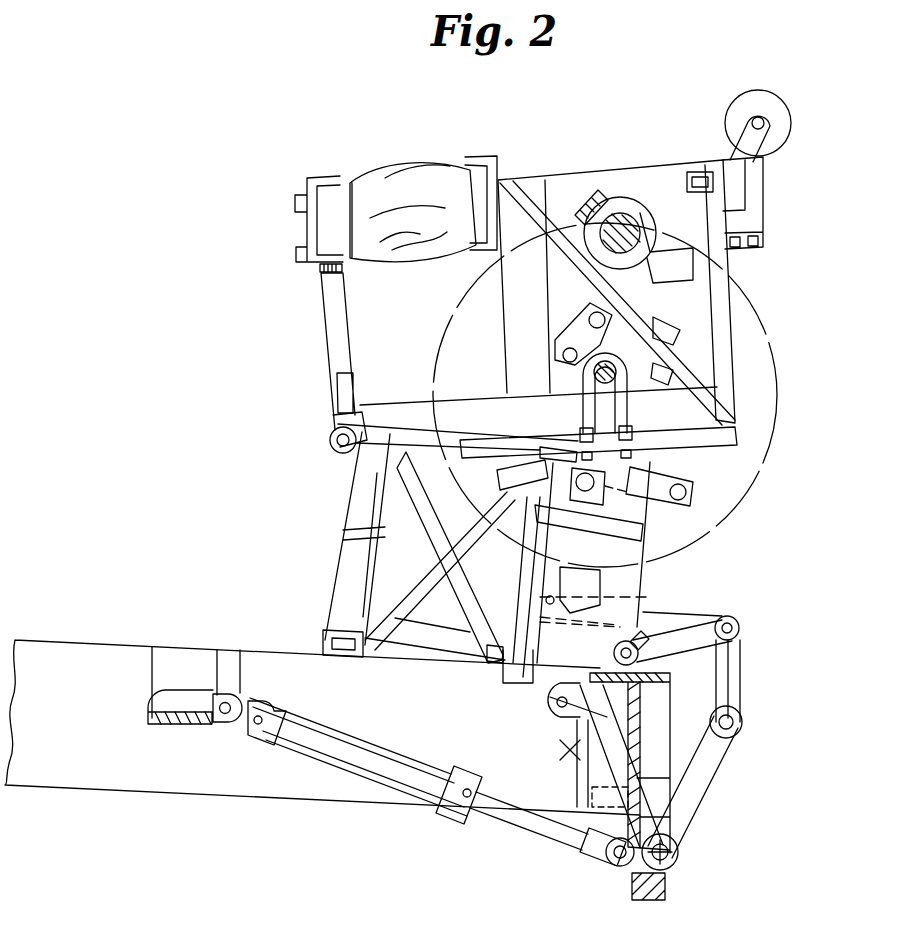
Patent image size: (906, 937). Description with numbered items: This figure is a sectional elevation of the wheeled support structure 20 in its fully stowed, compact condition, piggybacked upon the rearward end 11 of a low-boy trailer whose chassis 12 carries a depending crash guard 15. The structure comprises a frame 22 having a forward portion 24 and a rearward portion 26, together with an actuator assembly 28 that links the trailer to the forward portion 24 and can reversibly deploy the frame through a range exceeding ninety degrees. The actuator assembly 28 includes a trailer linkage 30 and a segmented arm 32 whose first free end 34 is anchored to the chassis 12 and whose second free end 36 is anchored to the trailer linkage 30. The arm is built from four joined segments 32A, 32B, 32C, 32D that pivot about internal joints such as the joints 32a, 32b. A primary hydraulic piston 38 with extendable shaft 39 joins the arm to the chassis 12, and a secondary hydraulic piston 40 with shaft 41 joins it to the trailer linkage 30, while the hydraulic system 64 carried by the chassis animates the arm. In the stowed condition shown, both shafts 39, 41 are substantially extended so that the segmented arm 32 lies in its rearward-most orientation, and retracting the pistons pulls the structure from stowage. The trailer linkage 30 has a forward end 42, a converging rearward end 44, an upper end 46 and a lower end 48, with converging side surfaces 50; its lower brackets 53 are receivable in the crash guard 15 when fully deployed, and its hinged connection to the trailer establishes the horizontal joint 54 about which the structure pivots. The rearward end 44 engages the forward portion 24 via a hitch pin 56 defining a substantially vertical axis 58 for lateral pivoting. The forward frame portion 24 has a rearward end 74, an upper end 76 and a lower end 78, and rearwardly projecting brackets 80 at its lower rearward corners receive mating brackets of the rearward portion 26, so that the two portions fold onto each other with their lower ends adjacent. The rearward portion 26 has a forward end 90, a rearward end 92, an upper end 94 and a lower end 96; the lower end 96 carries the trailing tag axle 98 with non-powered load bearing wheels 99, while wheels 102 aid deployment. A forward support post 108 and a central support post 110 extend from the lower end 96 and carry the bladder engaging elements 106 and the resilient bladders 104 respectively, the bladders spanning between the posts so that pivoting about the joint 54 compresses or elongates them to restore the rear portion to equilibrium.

The rearward end of the trailer 11 is at (105, 797).
The chassis 12 is at (76, 706).
The crash guard 15 is at (665, 892).
The wheeled support structure 20 is at (263, 330).
The frame 22 is at (330, 492).
The forward portion of the frame 24 is at (330, 578).
The rearward portion of the frame 26 is at (742, 340).
The actuator assembly 28 is at (468, 830).
The trailer linkage 30 is at (663, 567).
The segmented arm 32 is at (722, 775).
The arm segment 32A is at (580, 742).
The arm segment 32B is at (683, 815).
The arm segment 32C is at (737, 682).
The arm segment 32D is at (740, 628).
The internal joint 32a is at (678, 852).
The internal joint 32b is at (742, 722).
The first free end 34 is at (515, 718).
The second free end 36 is at (693, 613).
The primary hydraulic piston 38 is at (287, 757).
The shaft of the primary piston 39 is at (578, 855).
The secondary hydraulic piston 40 is at (640, 555).
The shaft of the secondary piston 41 is at (742, 620).
The forward end of the trailer linkage 42 is at (600, 577).
The rearward end of the trailer linkage 44 is at (530, 440).
The upper end of the trailer linkage 46 is at (515, 690).
The lower end of the trailer linkage 48 is at (620, 462).
The converging side surfaces 50 is at (602, 546).
The lower brackets 53 is at (667, 483).
The horizontal axis or joint 54 is at (345, 452).
The hitch pin 56 is at (480, 668).
The vertical axis 58 is at (520, 722).
The hydraulic system 64 is at (612, 196).
The rearward end of the forward frame portion 74 is at (355, 515).
The upper end of the forward frame portion 76 is at (340, 660).
The lower end of the forward frame portion 78 is at (400, 447).
The rearwardly projecting brackets 80 is at (331, 433).
The forward end of the rearward frame portion 90 is at (283, 185).
The rearward end of the rearward frame portion 92 is at (738, 288).
The upper end of the rearward frame portion 94 is at (527, 170).
The lower end of the rearward frame portion 96 is at (720, 433).
The trailing tag axle 98 is at (768, 388).
The load bearing wheels 99 is at (447, 305).
The wheels 102 is at (778, 108).
The resilient bladders 104 is at (428, 214).
The bladder engaging elements 106 is at (333, 210).
The forward support post 108 is at (330, 297).
The central support post 110 is at (517, 343).